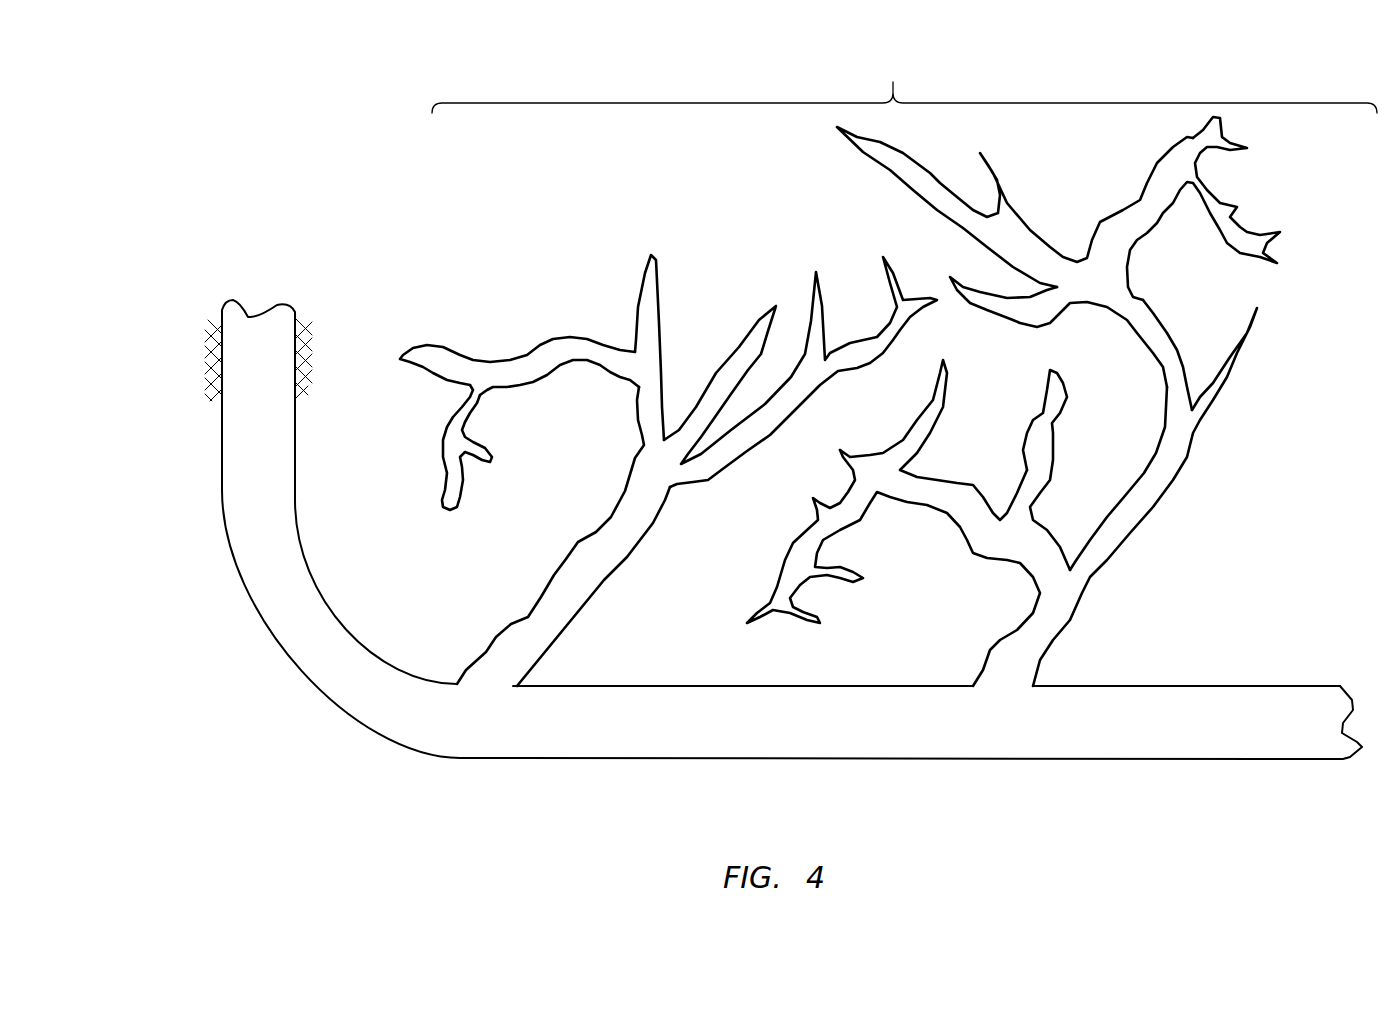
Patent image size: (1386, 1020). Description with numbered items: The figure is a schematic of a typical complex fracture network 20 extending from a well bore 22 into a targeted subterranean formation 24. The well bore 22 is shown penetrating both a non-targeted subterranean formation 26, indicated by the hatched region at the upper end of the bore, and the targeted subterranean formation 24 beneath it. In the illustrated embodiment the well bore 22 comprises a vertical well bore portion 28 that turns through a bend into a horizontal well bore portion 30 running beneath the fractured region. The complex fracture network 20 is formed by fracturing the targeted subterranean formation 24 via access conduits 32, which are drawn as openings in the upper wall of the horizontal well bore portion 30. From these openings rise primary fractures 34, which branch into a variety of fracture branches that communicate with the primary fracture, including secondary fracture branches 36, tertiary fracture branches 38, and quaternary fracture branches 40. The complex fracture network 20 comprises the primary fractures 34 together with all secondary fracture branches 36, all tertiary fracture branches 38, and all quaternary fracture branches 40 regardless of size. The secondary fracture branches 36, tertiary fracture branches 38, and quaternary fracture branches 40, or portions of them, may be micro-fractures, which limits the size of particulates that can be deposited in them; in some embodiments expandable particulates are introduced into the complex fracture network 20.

The complex fracture network 20 is at (893, 82).
The well bore 22 is at (270, 345).
The targeted subterranean formation 24 is at (781, 218).
The non-targeted subterranean formation 26 is at (212, 378).
The vertical well bore portion 28 is at (275, 440).
The horizontal well bore portion 30 is at (927, 715).
The access conduits 32 is at (486, 687).
The primary fractures 34 is at (550, 612).
The secondary fracture branches 36 is at (657, 357).
The tertiary fracture branches 38 is at (562, 348).
The quaternary fracture branches 40 is at (468, 410).